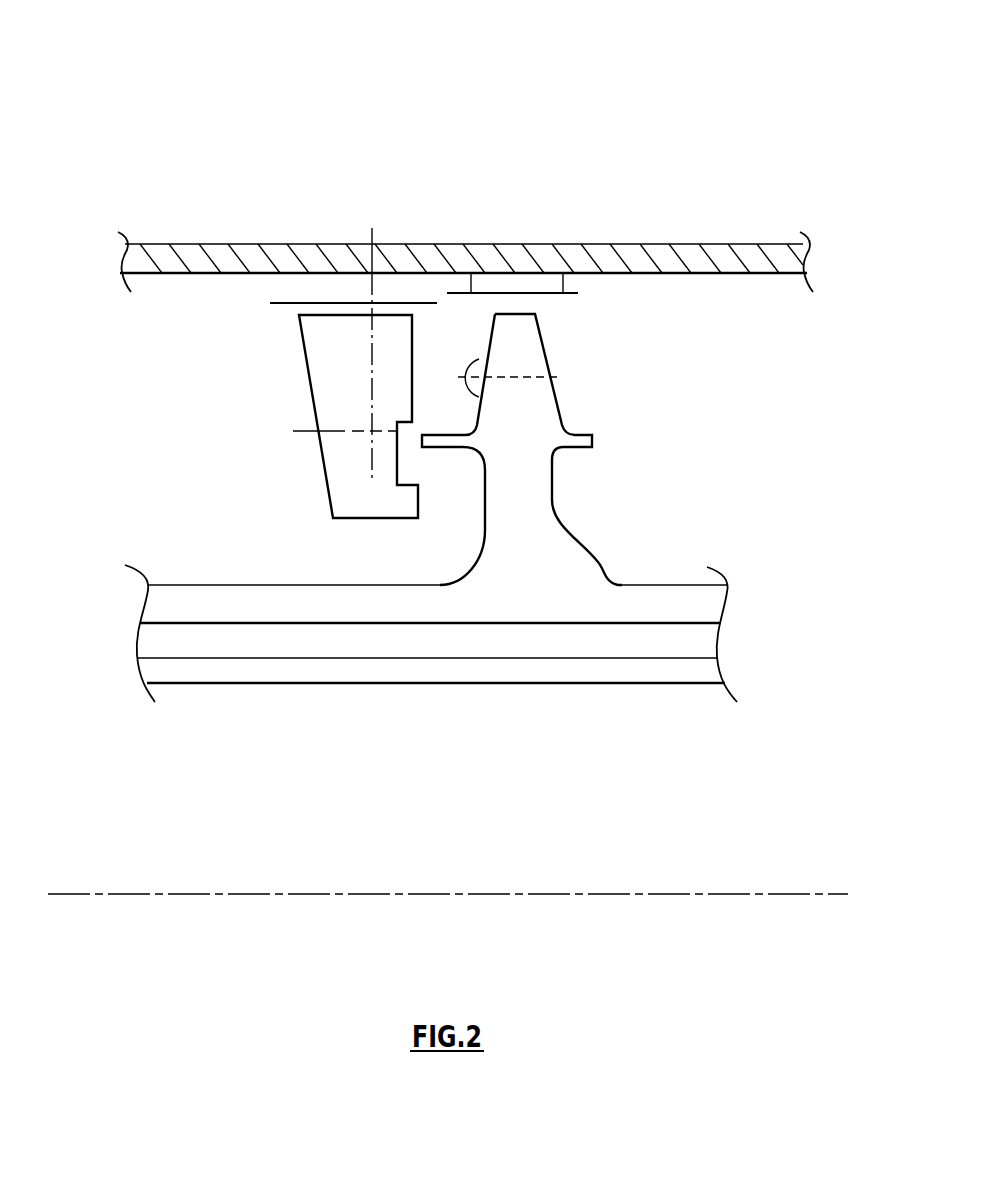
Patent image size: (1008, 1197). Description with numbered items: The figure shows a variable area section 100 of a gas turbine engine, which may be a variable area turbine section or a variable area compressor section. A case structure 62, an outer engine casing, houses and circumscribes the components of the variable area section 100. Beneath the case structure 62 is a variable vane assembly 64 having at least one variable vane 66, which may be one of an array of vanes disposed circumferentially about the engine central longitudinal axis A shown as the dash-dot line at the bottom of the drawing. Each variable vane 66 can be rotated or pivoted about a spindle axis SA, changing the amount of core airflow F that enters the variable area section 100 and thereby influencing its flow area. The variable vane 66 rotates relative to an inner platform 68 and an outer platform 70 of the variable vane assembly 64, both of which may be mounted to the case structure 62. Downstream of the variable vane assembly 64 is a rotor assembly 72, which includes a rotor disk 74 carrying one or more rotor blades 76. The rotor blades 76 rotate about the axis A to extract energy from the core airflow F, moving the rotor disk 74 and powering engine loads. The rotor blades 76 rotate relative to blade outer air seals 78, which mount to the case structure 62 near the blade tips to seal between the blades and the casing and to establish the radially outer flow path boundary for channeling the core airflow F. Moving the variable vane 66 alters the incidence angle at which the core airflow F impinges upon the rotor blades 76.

The variable area section 100 is at (392, 59).
The case structure 62 is at (389, 232).
The variable vane assembly 64 is at (322, 335).
The variable vane 66 is at (318, 345).
The inner platform 68 is at (308, 432).
The outer platform 70 is at (353, 303).
The rotor assembly 72 is at (565, 408).
The rotor disk 74 is at (567, 558).
The rotor blade 76 is at (512, 332).
The blade outer air seal 78 is at (528, 293).
The spindle axis SA is at (372, 388).
The engine central longitudinal axis A is at (443, 895).
The core airflow F is at (328, 394).